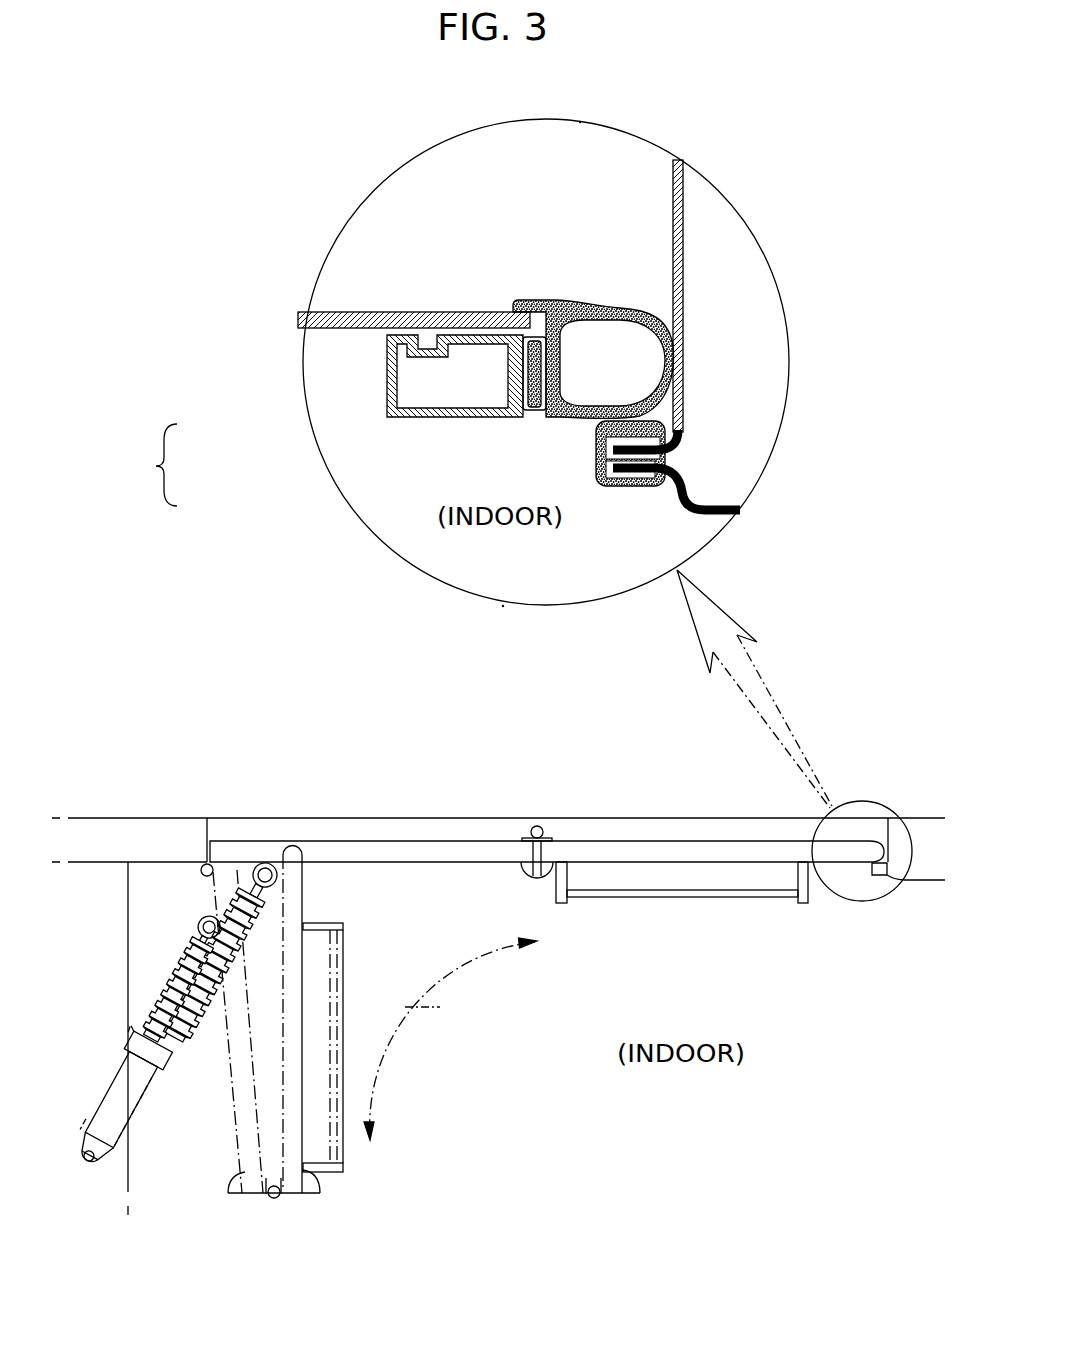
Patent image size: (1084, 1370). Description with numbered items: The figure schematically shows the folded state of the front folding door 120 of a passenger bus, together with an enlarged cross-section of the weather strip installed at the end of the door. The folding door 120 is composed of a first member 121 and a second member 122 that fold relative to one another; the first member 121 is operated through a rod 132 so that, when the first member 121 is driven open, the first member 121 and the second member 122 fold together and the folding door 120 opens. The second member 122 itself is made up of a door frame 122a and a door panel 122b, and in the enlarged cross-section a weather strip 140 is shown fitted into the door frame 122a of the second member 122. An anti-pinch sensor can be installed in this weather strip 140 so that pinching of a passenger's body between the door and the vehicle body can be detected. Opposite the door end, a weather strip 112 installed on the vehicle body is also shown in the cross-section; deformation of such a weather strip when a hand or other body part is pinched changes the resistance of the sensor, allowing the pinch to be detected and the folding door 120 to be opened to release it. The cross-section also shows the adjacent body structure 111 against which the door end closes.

The wall panel 111 is at (683, 258).
The weather strip 112 is at (612, 486).
The folding door 120 is at (338, 805).
The first member 121 is at (372, 846).
The second member 122 is at (366, 1268).
The door frame 122a is at (388, 398).
The door panel 122b is at (358, 325).
The rod 132 is at (128, 1097).
The weather strip 140 is at (600, 312).